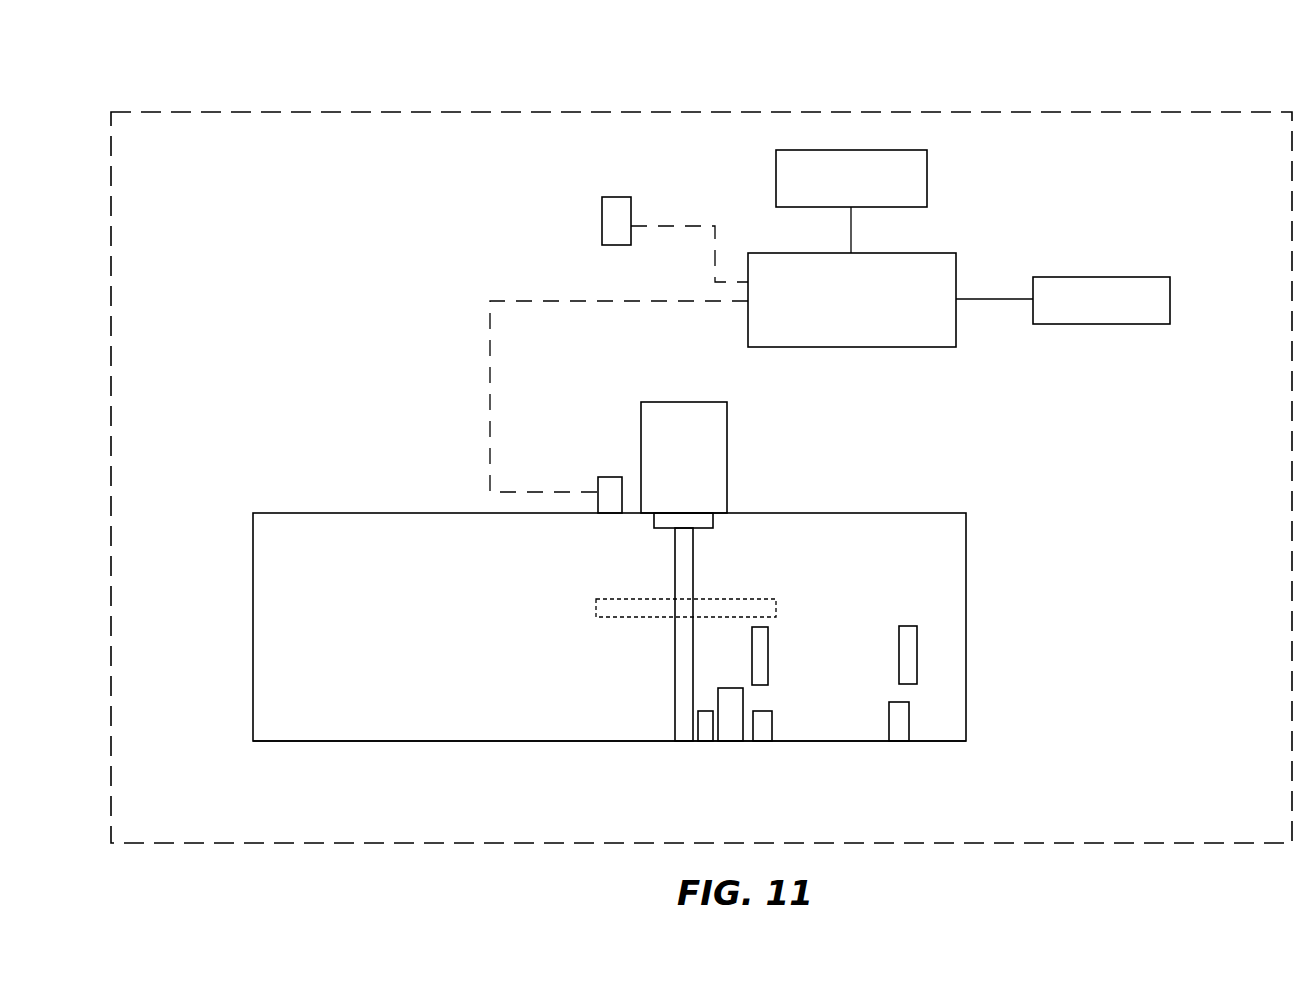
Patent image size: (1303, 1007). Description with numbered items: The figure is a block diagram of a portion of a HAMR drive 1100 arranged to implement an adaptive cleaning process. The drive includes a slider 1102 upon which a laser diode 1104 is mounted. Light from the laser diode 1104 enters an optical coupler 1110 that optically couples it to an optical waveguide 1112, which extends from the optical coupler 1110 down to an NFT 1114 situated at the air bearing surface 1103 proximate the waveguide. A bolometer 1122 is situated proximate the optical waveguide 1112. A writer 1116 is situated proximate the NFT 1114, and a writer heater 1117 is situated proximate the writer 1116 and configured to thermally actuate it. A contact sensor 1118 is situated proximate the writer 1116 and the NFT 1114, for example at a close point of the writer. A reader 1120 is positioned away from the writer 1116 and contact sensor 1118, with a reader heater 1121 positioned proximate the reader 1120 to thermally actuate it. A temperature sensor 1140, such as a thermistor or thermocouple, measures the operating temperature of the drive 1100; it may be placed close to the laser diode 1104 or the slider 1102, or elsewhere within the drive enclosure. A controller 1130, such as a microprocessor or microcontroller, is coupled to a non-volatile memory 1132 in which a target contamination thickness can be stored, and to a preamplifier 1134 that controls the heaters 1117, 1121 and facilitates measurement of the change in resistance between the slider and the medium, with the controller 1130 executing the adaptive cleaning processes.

The HAMR drive 1100 is at (1197, 112).
The slider 1102 is at (966, 592).
The air bearing surface 1103 is at (497, 741).
The laser diode 1104 is at (641, 425).
The optical coupler 1110 is at (700, 530).
The optical waveguide 1112 is at (675, 660).
The NFT 1114 is at (705, 741).
The writer 1116 is at (730, 741).
The writer heater 1117 is at (768, 655).
The contact sensor 1118 is at (762, 741).
The reader 1120 is at (899, 741).
The reader heater 1121 is at (910, 626).
The bolometer 1122 is at (748, 598).
The controller 1130 is at (926, 253).
The non-volatile memory 1132 is at (927, 172).
The preamplifier 1134 is at (1082, 277).
The temperature sensor 1140 is at (620, 197).